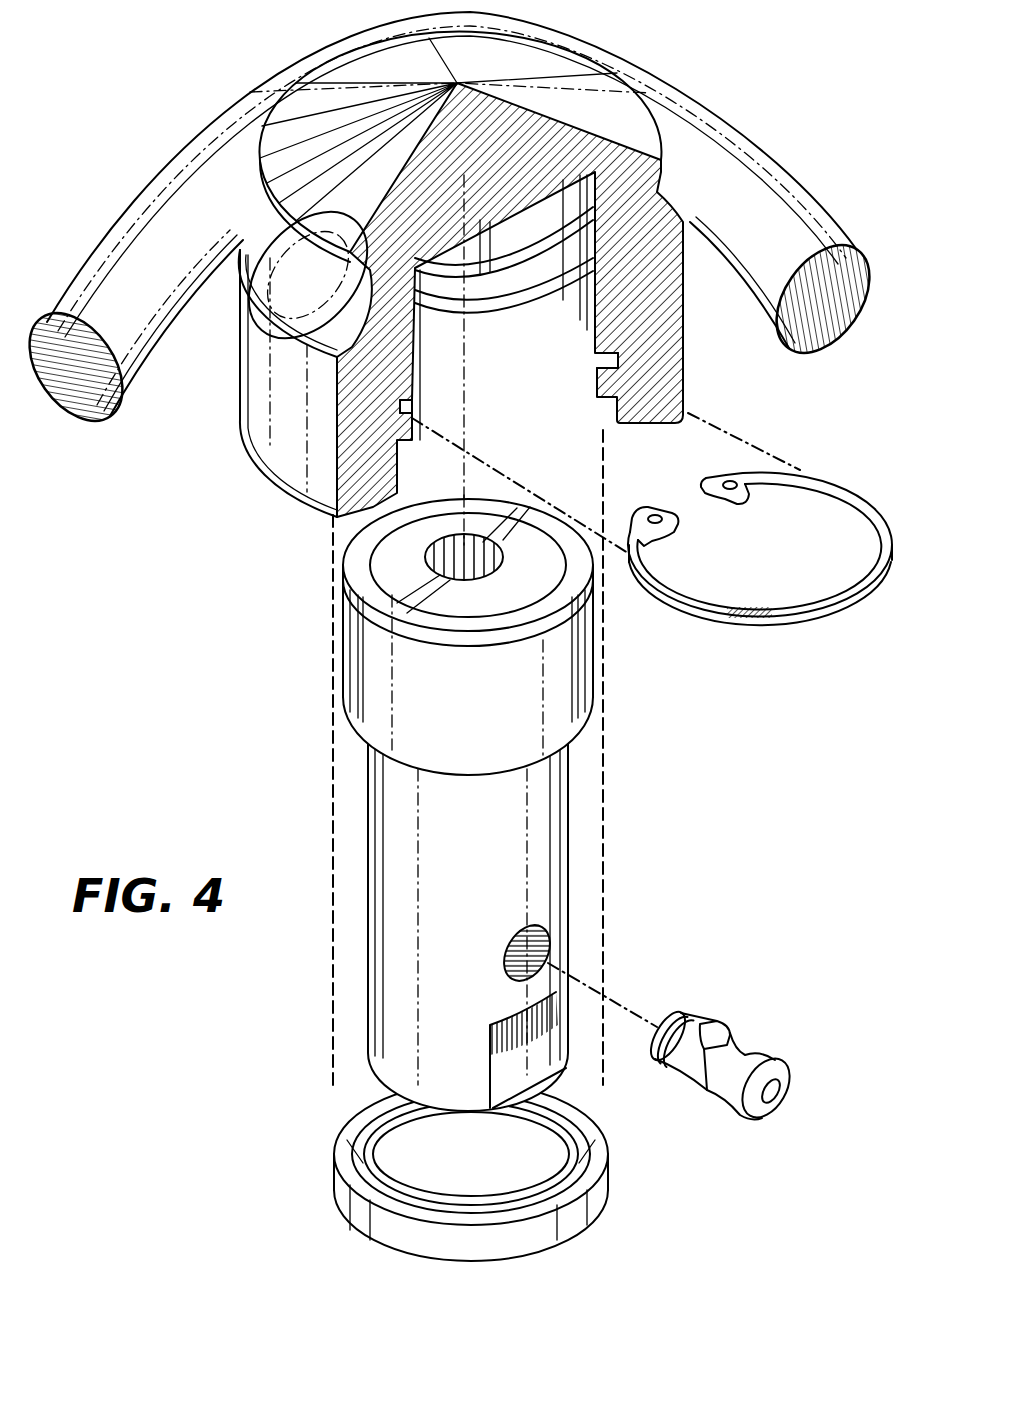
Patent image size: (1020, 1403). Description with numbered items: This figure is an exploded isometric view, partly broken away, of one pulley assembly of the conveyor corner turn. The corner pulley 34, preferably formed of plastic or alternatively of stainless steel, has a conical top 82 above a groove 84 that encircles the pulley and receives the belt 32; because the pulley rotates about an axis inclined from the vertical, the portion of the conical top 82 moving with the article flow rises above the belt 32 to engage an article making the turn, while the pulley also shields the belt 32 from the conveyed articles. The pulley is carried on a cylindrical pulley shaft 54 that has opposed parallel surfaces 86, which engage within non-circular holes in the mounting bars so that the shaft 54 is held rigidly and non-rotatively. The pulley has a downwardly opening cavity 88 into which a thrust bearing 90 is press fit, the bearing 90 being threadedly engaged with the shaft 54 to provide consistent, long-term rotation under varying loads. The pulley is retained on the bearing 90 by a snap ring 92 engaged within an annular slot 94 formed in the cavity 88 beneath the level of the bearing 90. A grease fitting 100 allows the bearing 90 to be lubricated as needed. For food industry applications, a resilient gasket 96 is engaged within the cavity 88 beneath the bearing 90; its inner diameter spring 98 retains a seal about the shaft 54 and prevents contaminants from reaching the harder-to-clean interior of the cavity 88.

The belt 32 is at (780, 164).
The conical top 82 is at (578, 48).
The corner pulley 34 is at (267, 466).
The groove 84 is at (282, 303).
The cavity 88 is at (440, 331).
The annular slot 94 is at (406, 401).
The thrust bearing 90 is at (600, 625).
The snap ring 92 is at (786, 635).
The pulley shaft 54 is at (572, 878).
The opposed parallel surfaces 86 is at (530, 1091).
The grease fitting 100 is at (724, 1027).
The inner diameter spring 98 is at (550, 1185).
The resilient gasket 96 is at (603, 1197).